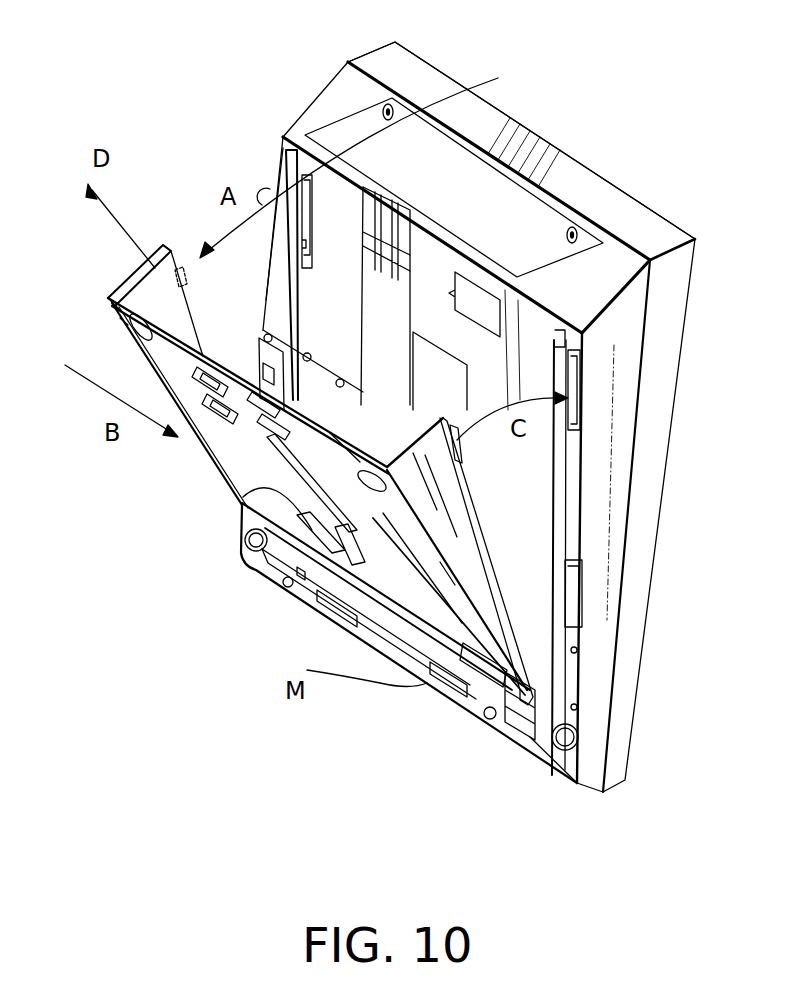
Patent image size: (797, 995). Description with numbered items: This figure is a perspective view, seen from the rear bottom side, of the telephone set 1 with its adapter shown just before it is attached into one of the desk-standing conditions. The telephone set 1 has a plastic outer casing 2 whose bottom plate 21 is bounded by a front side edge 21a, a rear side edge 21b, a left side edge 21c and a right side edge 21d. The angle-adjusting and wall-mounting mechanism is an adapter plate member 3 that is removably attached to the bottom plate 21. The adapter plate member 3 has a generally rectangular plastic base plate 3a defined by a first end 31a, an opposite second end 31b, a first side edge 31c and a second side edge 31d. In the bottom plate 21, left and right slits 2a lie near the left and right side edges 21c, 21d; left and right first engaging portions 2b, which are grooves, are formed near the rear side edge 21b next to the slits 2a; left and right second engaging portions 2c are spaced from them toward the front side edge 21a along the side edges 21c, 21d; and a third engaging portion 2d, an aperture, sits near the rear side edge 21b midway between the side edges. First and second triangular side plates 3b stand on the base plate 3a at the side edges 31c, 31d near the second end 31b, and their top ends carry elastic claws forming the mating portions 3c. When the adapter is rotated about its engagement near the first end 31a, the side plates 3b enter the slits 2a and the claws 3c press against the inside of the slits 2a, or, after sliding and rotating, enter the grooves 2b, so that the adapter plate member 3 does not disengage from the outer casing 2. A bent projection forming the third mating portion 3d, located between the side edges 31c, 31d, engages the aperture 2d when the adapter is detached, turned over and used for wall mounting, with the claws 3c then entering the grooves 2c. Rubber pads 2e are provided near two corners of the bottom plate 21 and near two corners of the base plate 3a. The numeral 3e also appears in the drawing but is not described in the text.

The telephone set 1 is at (677, 483).
The outer casing 2 is at (552, 133).
The slits 2a is at (412, 225).
The first engaging portions 2b is at (717, 400).
The second engaging portions 2c is at (260, 357).
The third engaging portion 2d is at (605, 242).
The rubber pads 2e is at (562, 753).
The bottom plate 21 is at (545, 337).
The front side edge 21a is at (463, 710).
The rear side edge 21b is at (488, 118).
The left side edge 21c is at (270, 237).
The right side edge 21d is at (583, 453).
The adapter plate member 3 is at (211, 472).
The base plate 3a is at (240, 450).
The side plates 3b is at (165, 250).
The mating portions 3c is at (187, 282).
The third mating portion 3d is at (240, 503).
The elongated hole 3e is at (128, 330).
The first end 31a is at (307, 607).
The second end 31b is at (127, 290).
The first side edge 31c is at (120, 320).
The second side edge 31d is at (453, 577).